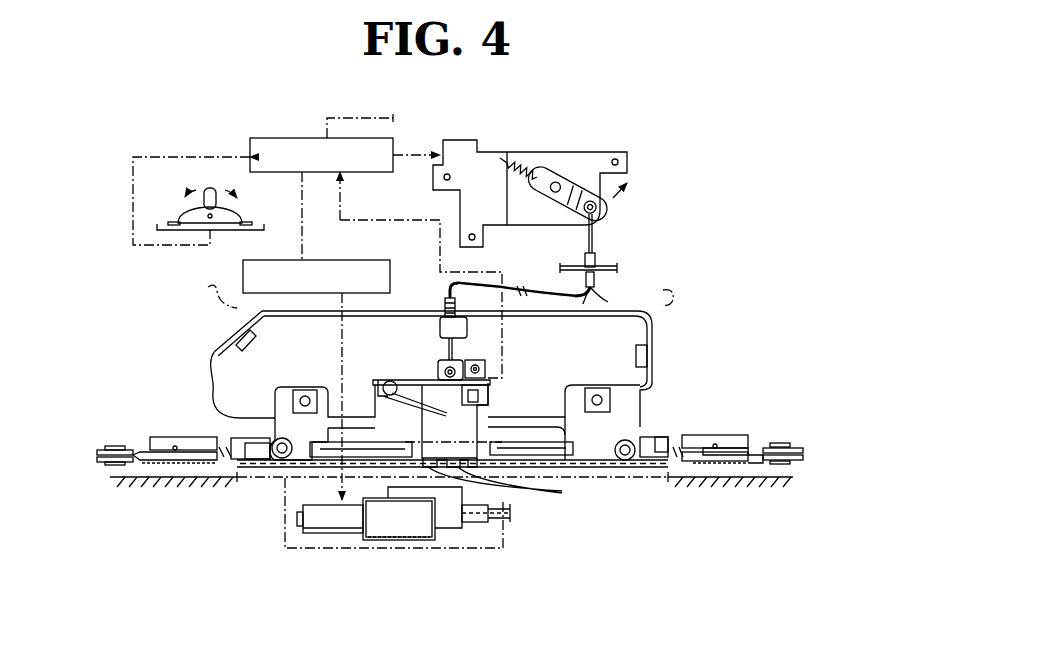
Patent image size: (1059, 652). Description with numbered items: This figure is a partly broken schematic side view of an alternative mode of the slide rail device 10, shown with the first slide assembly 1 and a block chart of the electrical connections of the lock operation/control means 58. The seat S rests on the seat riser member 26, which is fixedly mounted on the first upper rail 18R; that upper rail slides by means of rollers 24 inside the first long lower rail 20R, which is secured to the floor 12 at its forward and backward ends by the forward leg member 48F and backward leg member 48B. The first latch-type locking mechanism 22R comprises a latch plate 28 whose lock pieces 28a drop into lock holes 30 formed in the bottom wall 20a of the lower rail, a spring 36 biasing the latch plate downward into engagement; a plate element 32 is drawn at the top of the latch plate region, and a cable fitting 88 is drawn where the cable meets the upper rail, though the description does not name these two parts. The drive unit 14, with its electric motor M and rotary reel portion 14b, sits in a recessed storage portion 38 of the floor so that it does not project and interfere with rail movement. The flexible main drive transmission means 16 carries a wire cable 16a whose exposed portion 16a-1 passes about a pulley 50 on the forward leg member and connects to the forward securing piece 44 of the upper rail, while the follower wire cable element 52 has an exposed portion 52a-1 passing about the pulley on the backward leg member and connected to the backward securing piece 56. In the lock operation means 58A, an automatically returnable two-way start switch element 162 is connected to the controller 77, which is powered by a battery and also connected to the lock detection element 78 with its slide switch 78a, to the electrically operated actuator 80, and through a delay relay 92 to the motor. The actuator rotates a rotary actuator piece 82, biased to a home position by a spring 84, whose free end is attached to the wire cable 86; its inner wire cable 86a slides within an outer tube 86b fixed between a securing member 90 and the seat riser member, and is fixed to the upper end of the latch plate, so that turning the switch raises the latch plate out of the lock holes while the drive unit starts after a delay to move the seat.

The first slide assembly 1 is at (793, 382).
The slide rail device 10 is at (690, 255).
The floor 12 is at (213, 473).
The drive unit 14 is at (466, 493).
The rotary reel portion 14b is at (447, 513).
The flexible main drive transmission means 16 is at (143, 450).
The wire cable 16a is at (158, 437).
The first wire cable exposed portion 16a-1 is at (165, 384).
The first upper rail 18R is at (578, 384).
The first long lower rail 20R is at (667, 433).
The bottom wall 20a is at (287, 467).
The first latch-type locking mechanism 22R is at (430, 370).
The rollers 24 is at (285, 442).
The seat riser member 26 is at (653, 340).
The latch plate 28 is at (471, 422).
The lock pieces 28a is at (517, 487).
The lock holes 30 is at (320, 466).
The lock plate 32 is at (430, 384).
The spring 36 is at (383, 393).
The recessed storage portion 38 is at (505, 546).
The forward securing piece 44 is at (247, 450).
The forward leg member 48F is at (147, 470).
The backward leg member 48B is at (750, 467).
The pulley 50 is at (102, 448).
The follower wire cable element 52 is at (748, 448).
The follower wire cable exposed portion 52a-1 is at (703, 450).
The backward securing piece 56 is at (655, 437).
The lock operation/control means 58 is at (192, 130).
The lock operation means 58A is at (110, 222).
The controller 77 is at (290, 137).
The lock detection element 78 is at (487, 367).
The slide switch 78a is at (481, 397).
The electrically operated actuator 80 is at (577, 146).
The rotary actuator piece 82 is at (567, 186).
The spring 84 is at (530, 165).
The wire cable 86 is at (539, 288).
The inner wire cable 86a is at (600, 238).
The outer tube 86b is at (452, 287).
The cable fitting 88 is at (462, 333).
The securing member 90 is at (603, 272).
The delay relay 92 is at (350, 260).
The start switch element 162 is at (241, 217).
The electric motor M is at (327, 532).
The seat S is at (680, 313).